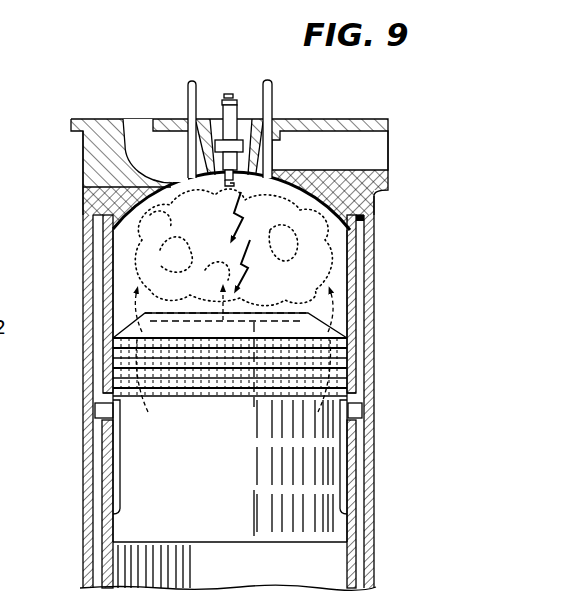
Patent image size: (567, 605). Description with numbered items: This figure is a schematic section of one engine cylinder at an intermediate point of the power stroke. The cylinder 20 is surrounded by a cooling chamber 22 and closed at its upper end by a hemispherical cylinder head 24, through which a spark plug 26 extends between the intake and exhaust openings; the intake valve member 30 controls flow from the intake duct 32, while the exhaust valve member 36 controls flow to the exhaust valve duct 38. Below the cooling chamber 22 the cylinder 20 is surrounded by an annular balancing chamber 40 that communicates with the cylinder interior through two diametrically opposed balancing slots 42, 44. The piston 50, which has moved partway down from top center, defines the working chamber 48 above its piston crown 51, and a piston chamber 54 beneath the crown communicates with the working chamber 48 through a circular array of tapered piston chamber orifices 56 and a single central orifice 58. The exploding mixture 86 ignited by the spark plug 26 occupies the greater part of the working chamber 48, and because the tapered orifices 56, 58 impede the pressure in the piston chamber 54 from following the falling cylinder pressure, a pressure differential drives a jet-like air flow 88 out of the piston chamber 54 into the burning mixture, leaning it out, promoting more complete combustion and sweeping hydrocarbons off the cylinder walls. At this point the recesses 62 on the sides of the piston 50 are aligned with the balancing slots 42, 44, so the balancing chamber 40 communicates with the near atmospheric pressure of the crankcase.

The cylinder 20 is at (105, 290).
The cooling chamber 22 is at (98, 262).
The cylinder head 24 is at (100, 196).
The spark plug 26 is at (238, 103).
The intake valve member 30 is at (263, 184).
The intake duct 32 is at (222, 156).
The exhaust valve member 36 is at (199, 186).
The exhaust valve duct 38 is at (138, 140).
The annular balancing chamber 40 is at (83, 497).
The balancing slot 42 is at (100, 406).
The balancing slot 44 is at (358, 412).
The working chamber 48 is at (218, 265).
The piston 50 is at (348, 393).
The piston crown 51 is at (345, 277).
The piston chamber 54 is at (229, 408).
The piston chamber orifices 56 is at (233, 384).
The central orifice 58 is at (256, 241).
The recesses 62 is at (100, 447).
The exploding mixture 86 is at (352, 228).
The air flow 88 is at (122, 300).